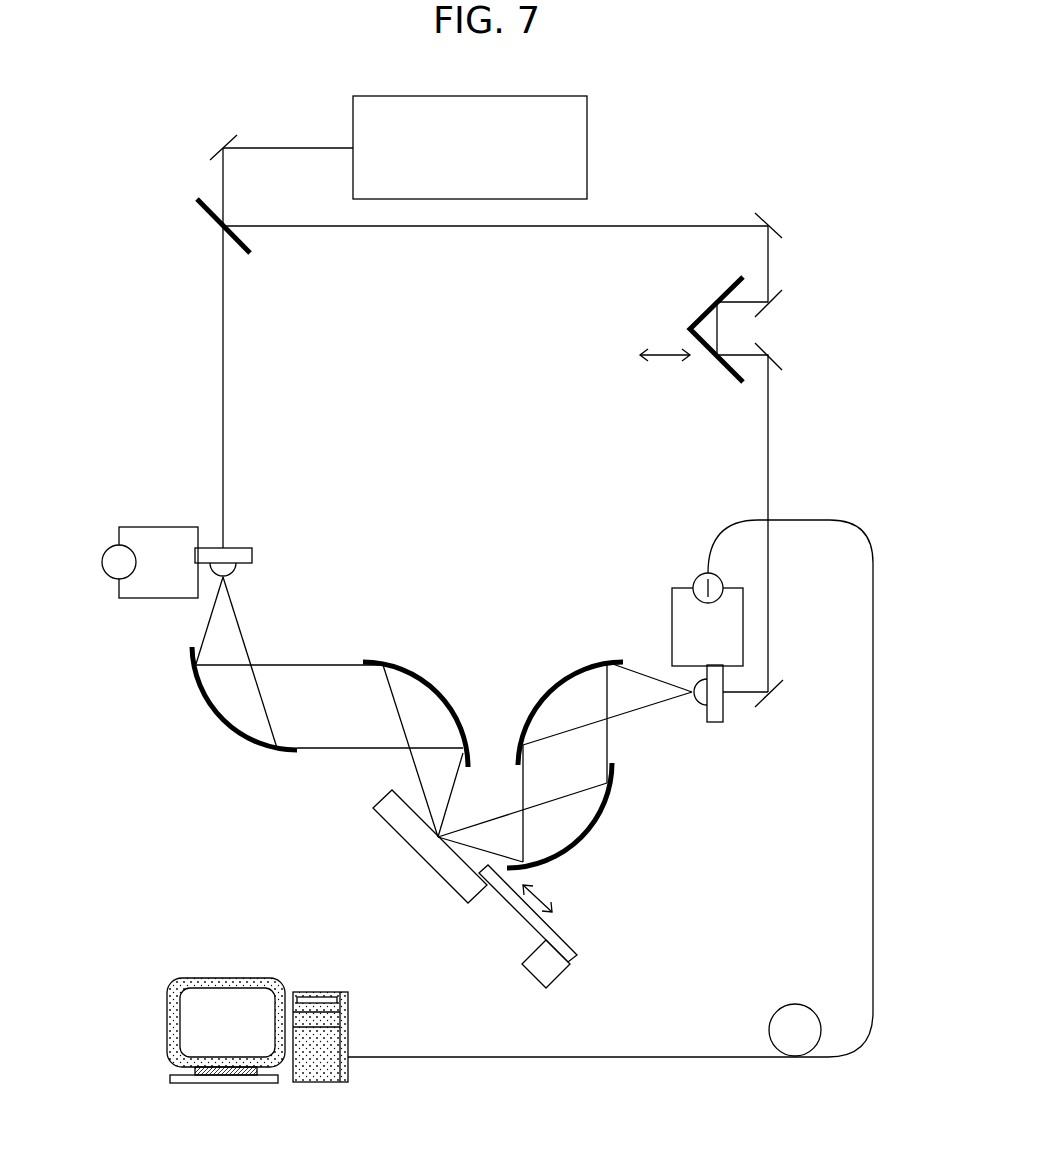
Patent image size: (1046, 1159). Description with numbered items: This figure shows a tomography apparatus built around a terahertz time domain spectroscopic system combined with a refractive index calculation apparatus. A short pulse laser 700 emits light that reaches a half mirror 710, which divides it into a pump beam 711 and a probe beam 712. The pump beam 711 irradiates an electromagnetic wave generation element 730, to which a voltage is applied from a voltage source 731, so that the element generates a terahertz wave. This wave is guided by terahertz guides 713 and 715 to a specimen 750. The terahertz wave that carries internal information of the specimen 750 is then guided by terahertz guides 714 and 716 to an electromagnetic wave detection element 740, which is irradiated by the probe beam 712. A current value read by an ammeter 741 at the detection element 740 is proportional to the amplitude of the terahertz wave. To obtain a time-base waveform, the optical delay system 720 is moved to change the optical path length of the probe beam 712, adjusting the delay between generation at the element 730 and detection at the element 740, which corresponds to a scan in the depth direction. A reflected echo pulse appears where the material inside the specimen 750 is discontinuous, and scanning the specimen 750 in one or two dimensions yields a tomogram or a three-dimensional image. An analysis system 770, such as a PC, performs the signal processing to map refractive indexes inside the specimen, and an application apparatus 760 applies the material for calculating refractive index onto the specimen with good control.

The short pulse laser 700 is at (560, 177).
The half mirror 710 is at (201, 209).
The pump beam 711 is at (223, 386).
The probe beam 712 is at (768, 392).
The optical delay system 720 is at (682, 329).
The electromagnetic wave generation element 730 is at (237, 548).
The voltage source 731 is at (105, 546).
The terahertz guide 713 is at (244, 711).
The terahertz guide 715 is at (415, 700).
The terahertz guide 714 is at (570, 699).
The terahertz guide 716 is at (582, 816).
The electromagnetic wave detection element 740 is at (718, 707).
The ammeter 741 is at (700, 574).
The specimen 750 is at (390, 810).
The application apparatus 760 is at (558, 938).
The analysis system 770 is at (257, 1030).